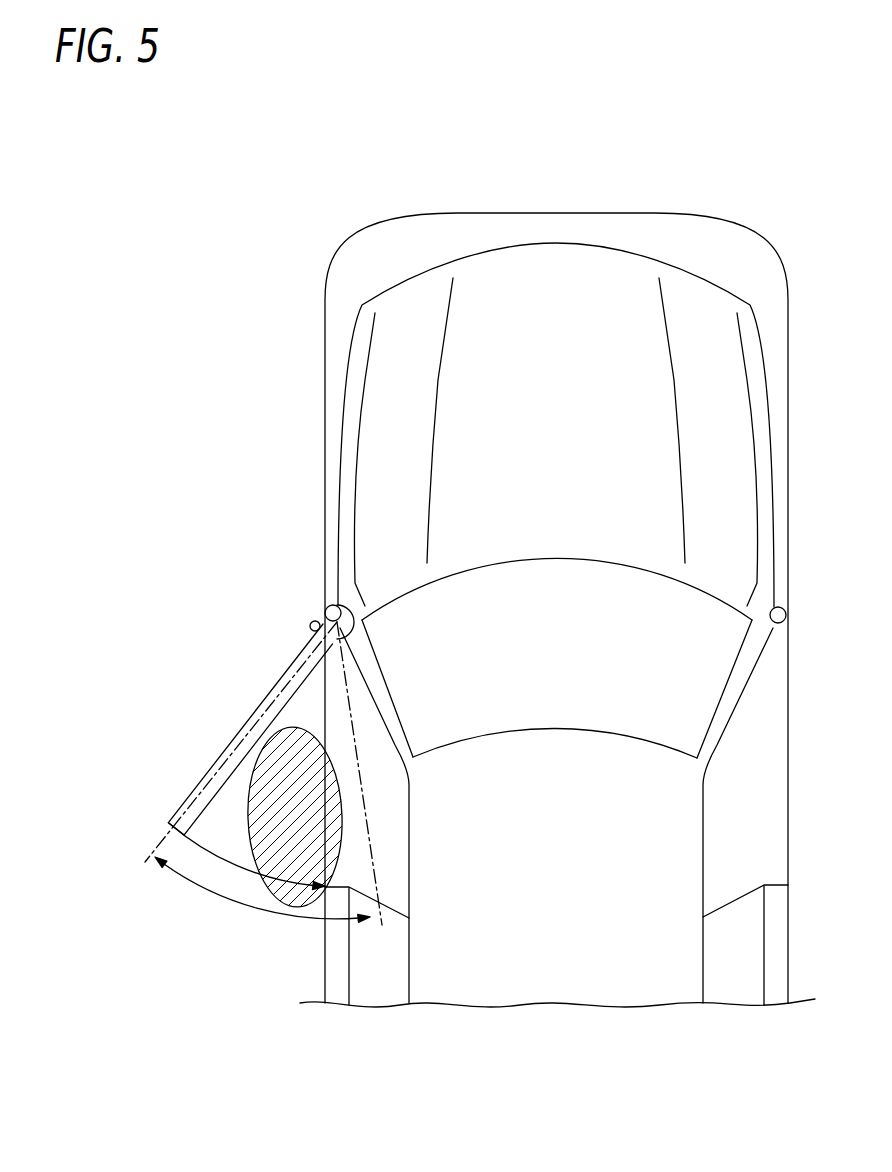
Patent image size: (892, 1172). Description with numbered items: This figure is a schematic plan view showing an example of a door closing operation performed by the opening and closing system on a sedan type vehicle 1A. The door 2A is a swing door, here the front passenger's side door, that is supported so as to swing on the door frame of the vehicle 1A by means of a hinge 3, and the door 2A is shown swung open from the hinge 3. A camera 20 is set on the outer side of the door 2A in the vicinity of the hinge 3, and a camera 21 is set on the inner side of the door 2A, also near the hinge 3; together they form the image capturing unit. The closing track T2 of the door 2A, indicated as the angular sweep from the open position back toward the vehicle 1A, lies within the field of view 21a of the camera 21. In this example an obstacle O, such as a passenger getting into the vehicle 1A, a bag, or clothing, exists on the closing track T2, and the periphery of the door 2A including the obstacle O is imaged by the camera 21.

The vehicle 1A is at (716, 235).
The camera 21 is at (327, 605).
The hinge 3 is at (324, 611).
The camera 20 is at (310, 625).
The door 2A is at (232, 740).
The field of view 21a is at (198, 889).
The closing track T2 is at (245, 869).
The obstacle O is at (295, 906).